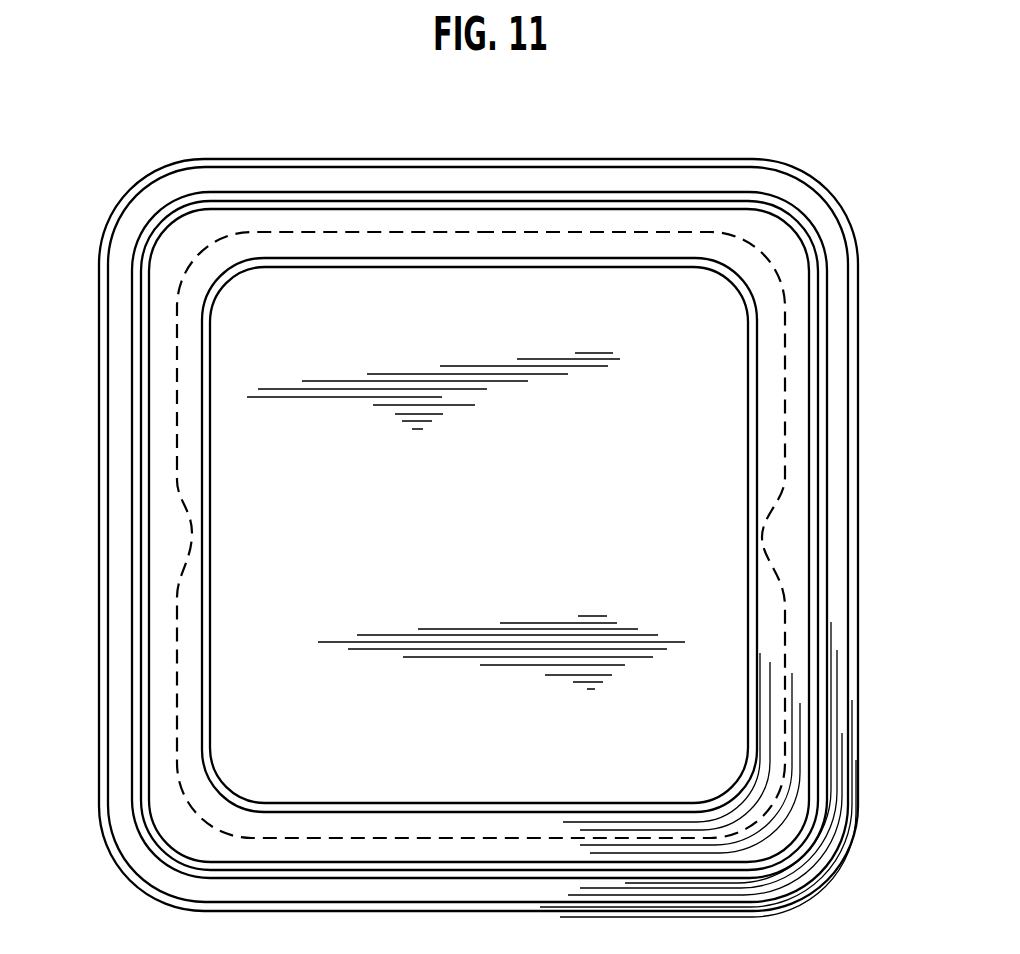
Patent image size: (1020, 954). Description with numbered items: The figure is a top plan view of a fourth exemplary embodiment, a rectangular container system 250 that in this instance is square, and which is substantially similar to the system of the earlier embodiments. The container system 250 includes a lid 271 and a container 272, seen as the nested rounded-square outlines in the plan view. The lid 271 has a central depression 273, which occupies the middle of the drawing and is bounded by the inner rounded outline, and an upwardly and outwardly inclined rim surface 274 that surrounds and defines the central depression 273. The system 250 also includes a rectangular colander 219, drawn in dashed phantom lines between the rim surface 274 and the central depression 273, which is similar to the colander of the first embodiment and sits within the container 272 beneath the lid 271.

The rectangular container system 250 is at (680, 156).
The lid 271 is at (868, 234).
The container 272 is at (82, 582).
The rim surface 274 is at (805, 222).
The rectangular colander 219 is at (772, 287).
The central depression 273 is at (507, 551).